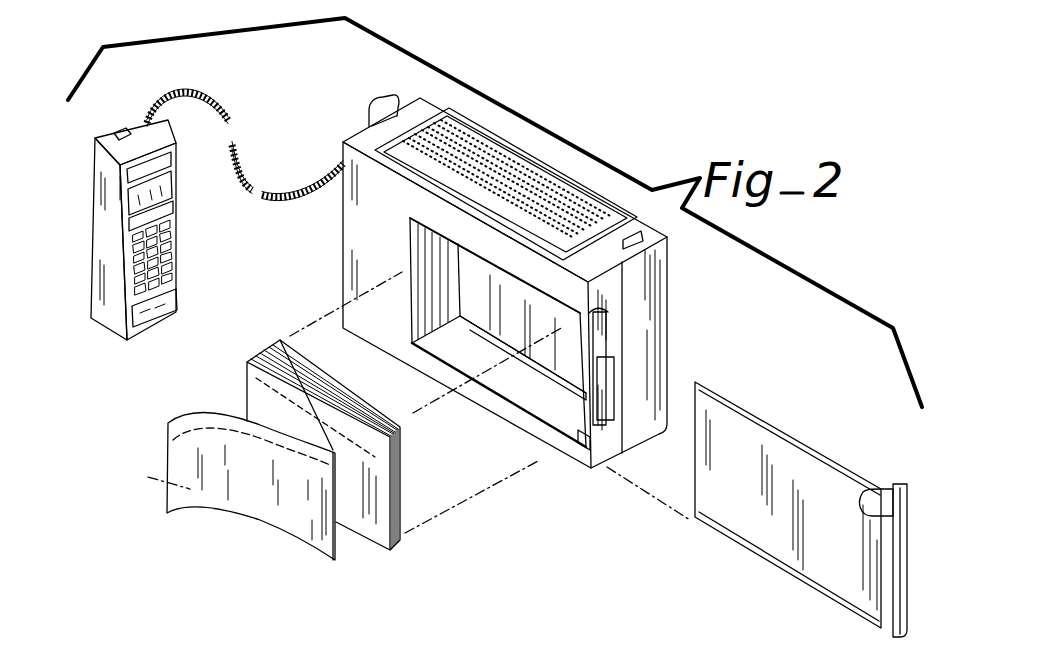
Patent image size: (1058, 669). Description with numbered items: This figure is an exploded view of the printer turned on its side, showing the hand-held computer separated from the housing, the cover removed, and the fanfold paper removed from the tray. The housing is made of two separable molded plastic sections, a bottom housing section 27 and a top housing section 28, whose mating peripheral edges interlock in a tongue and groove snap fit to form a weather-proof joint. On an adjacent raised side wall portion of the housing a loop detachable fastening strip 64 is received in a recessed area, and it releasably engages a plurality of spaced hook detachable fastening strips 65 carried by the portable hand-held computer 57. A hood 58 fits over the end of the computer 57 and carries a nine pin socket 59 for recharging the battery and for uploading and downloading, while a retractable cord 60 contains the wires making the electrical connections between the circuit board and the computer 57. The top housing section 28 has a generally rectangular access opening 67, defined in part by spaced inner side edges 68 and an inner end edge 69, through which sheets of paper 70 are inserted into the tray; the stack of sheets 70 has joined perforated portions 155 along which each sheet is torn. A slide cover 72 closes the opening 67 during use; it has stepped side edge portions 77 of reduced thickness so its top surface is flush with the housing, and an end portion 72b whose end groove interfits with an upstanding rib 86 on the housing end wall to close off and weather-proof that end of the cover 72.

The bottom housing section 27 is at (665, 329).
The top housing section 28 is at (597, 465).
The portable hand-held computer 57 is at (100, 254).
The hood 58 is at (103, 170).
The 9 pin "O" socket 59 is at (126, 131).
The retractable cord 60 is at (284, 192).
The loop detachable fastening strip 64 is at (467, 167).
The hook detachable fastening strips 65 is at (163, 158).
The access opening 67 is at (562, 408).
The inner side edges 68 is at (552, 300).
The inner end edge 69 is at (412, 298).
The sheets of paper 70 is at (213, 502).
The slide cover 72 is at (833, 570).
The cover end portion 72b is at (860, 488).
The side edge portions 77 is at (793, 430).
The upstanding rib 86 is at (558, 433).
The joined perforated portions 155 is at (337, 548).